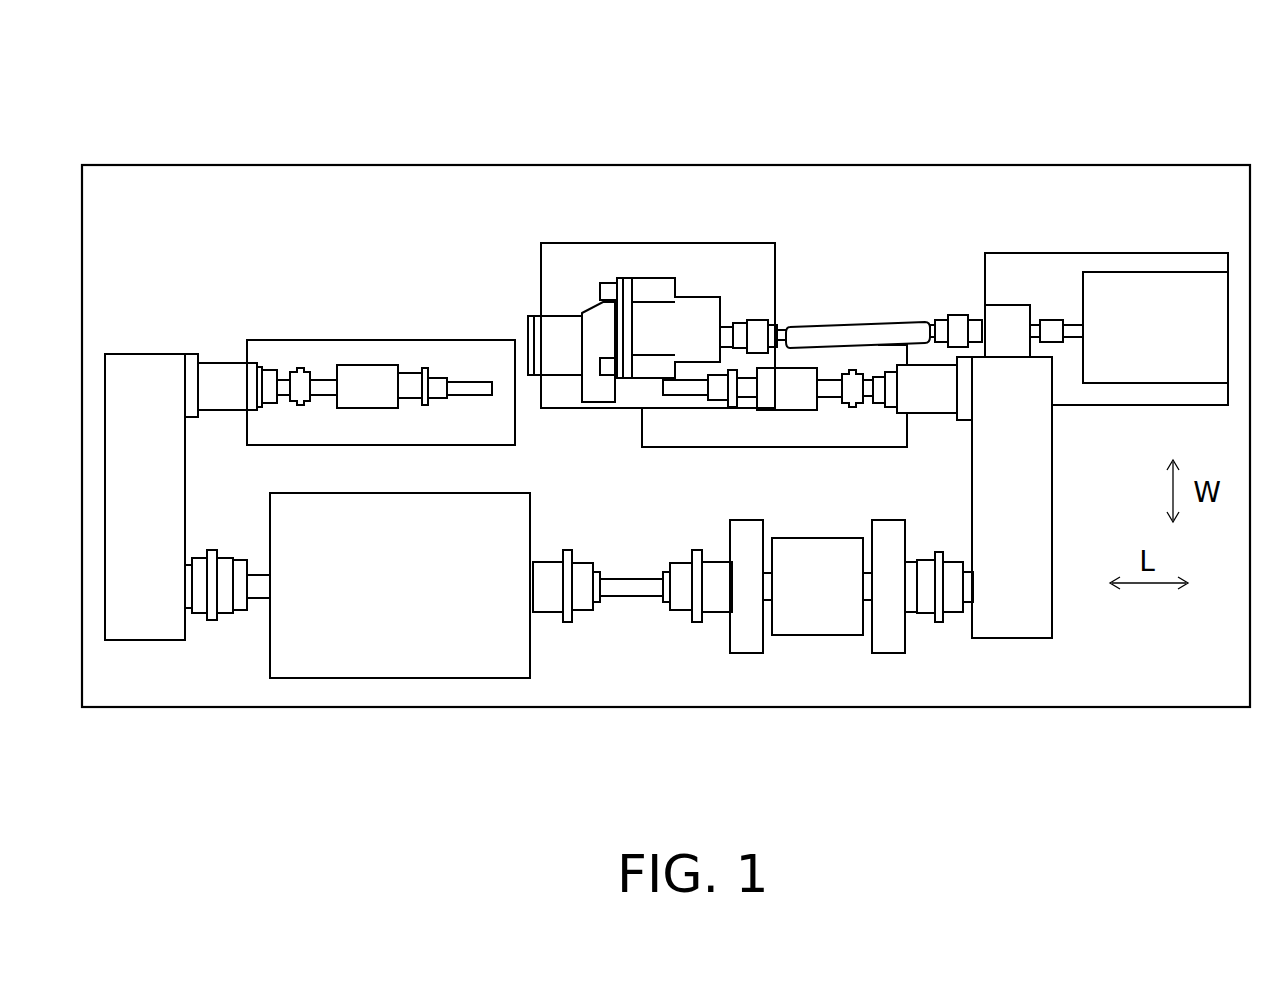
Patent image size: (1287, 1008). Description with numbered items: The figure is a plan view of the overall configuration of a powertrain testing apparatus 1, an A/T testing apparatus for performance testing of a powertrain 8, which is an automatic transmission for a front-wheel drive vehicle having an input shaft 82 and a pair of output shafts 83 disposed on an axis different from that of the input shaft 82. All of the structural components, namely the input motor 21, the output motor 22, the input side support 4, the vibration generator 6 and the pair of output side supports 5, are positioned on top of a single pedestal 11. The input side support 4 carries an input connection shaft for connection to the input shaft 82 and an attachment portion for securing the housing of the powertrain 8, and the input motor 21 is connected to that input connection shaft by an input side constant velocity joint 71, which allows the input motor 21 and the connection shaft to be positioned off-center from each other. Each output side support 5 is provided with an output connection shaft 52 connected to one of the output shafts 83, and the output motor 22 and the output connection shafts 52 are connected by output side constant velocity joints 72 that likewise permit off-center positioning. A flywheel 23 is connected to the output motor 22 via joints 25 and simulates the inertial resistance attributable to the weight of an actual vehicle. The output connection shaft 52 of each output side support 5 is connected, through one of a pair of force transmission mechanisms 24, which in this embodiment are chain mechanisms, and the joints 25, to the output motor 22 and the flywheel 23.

The powertrain testing apparatus 1 is at (1122, 732).
The input side support 4 is at (690, 318).
The output side support 5 is at (370, 375).
The vibration generator 6 is at (673, 262).
The powertrain 8 is at (560, 335).
The pedestal 11 is at (157, 205).
The input motor 21 is at (1185, 307).
The output motor 22 is at (388, 603).
The flywheel 23 is at (825, 608).
The force transmission mechanism 24 is at (140, 602).
The joint 25 is at (227, 597).
The output connection shaft 52 is at (470, 385).
The input side constant velocity joint 71 is at (830, 333).
The output side constant velocity joint 72 is at (293, 370).
The input shaft 82 is at (607, 323).
The output shaft 83 is at (603, 390).